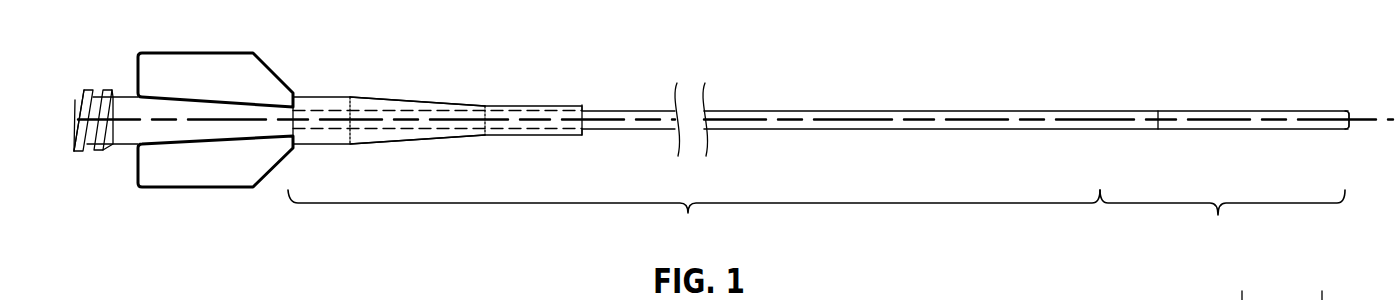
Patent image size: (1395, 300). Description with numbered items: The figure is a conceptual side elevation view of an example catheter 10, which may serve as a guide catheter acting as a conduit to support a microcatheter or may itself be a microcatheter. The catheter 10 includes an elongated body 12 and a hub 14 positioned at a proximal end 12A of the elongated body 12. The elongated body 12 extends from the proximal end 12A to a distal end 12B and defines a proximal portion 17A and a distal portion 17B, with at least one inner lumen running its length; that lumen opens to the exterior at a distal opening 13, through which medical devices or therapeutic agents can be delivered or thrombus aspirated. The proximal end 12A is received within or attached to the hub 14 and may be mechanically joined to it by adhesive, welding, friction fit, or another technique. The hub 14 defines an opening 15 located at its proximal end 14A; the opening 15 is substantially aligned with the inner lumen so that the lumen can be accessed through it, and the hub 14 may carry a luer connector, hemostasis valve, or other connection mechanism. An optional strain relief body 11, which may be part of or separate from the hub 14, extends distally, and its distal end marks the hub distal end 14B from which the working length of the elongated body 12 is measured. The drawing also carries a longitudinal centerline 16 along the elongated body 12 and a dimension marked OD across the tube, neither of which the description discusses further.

The catheter 10 is at (736, 77).
The strain relief body 11 is at (497, 106).
The elongated body 12 is at (829, 111).
The proximal end of elongated body 12A is at (294, 112).
The distal end of elongated body 12B is at (1348, 110).
The distal opening 13 is at (1350, 131).
The hub 14 is at (280, 183).
The proximal end of hub 14A is at (74, 103).
The hub distal end 14B is at (582, 106).
The opening 15 is at (73, 120).
The lumen centerline 16 is at (1005, 111).
The proximal portion 17A is at (694, 220).
The distal portion 17B is at (1222, 222).
The outer diameter OD is at (1158, 140).